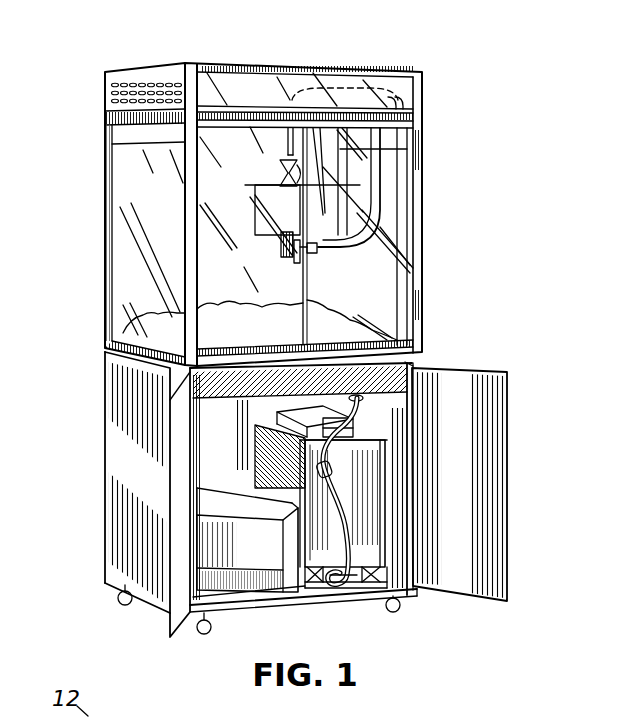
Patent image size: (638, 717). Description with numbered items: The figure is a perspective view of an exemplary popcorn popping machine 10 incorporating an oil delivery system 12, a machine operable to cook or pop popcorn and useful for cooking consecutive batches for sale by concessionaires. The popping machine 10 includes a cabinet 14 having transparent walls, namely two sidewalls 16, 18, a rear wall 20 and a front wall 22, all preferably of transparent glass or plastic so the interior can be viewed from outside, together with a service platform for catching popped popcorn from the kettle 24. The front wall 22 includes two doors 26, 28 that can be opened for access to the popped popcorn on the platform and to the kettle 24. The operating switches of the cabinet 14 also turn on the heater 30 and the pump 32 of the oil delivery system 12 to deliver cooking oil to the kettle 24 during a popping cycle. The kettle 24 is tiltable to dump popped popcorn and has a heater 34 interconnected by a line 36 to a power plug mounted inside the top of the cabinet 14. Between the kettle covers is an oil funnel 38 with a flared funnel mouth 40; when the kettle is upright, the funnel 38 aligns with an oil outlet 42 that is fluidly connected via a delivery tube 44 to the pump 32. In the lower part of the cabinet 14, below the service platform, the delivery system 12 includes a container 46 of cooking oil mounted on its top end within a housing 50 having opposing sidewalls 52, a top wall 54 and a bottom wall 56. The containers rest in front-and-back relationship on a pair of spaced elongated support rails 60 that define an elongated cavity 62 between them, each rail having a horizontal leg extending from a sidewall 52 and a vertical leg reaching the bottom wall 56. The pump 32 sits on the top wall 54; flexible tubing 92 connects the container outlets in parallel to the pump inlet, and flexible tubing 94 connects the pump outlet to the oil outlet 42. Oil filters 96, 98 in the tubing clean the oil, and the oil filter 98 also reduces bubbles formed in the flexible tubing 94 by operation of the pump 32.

The popcorn popping machine 10 is at (481, 65).
The oil delivery system 12 is at (421, 610).
The cabinet 14 is at (223, 60).
The sidewall 16 is at (111, 255).
The sidewall 18 is at (420, 264).
The rear wall 20 is at (104, 188).
The front wall 22 is at (392, 320).
The kettle 24 is at (263, 243).
The door 26 is at (277, 340).
The door 28 is at (397, 318).
The heater 30 is at (277, 417).
The pump 32 is at (367, 423).
The heater 34 is at (291, 267).
The line 36 is at (415, 179).
The oil funnel 38 is at (270, 184).
The flared funnel mouth 40 is at (281, 163).
The oil outlet 42 is at (286, 140).
The delivery tube 44 is at (351, 92).
The container 46 is at (363, 517).
The housing 50 is at (397, 441).
The sidewall 52 is at (281, 468).
The top wall 54 is at (257, 437).
The bottom wall 56 is at (338, 591).
The support rail 60 is at (388, 568).
The cavity 62 is at (348, 586).
The flexible tubing 92 is at (353, 497).
The flexible tubing 94 is at (368, 402).
The oil filter 96 is at (333, 468).
The oil filter 98 is at (413, 364).